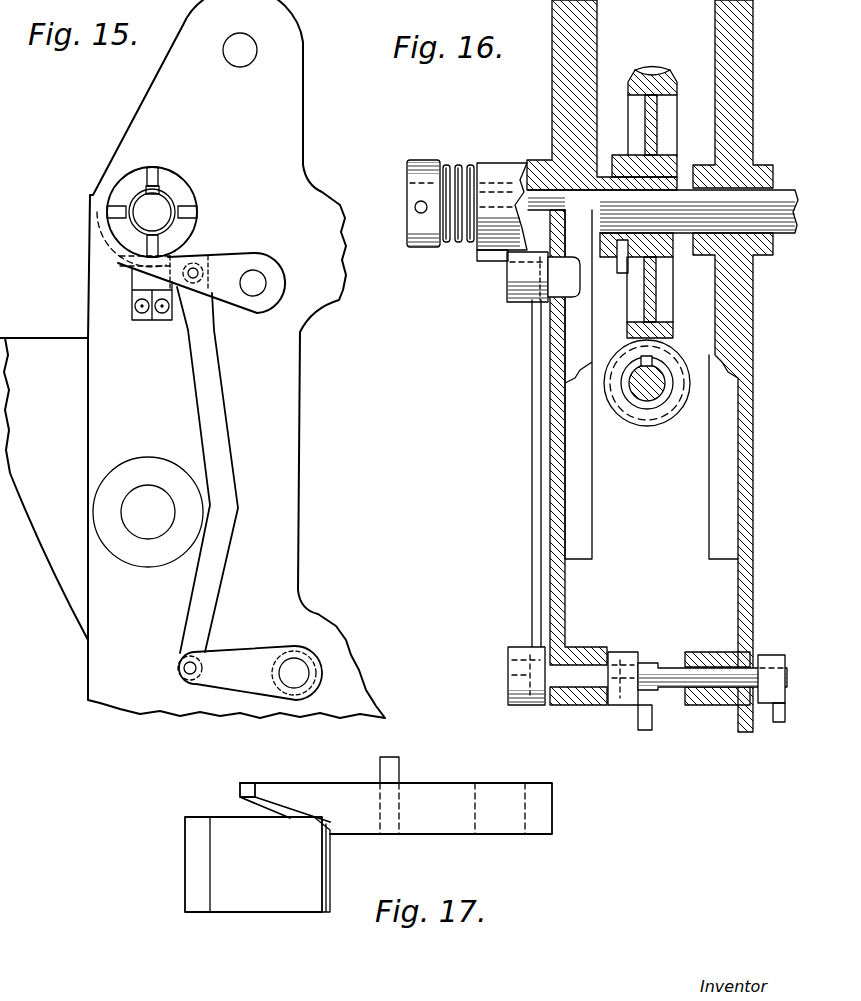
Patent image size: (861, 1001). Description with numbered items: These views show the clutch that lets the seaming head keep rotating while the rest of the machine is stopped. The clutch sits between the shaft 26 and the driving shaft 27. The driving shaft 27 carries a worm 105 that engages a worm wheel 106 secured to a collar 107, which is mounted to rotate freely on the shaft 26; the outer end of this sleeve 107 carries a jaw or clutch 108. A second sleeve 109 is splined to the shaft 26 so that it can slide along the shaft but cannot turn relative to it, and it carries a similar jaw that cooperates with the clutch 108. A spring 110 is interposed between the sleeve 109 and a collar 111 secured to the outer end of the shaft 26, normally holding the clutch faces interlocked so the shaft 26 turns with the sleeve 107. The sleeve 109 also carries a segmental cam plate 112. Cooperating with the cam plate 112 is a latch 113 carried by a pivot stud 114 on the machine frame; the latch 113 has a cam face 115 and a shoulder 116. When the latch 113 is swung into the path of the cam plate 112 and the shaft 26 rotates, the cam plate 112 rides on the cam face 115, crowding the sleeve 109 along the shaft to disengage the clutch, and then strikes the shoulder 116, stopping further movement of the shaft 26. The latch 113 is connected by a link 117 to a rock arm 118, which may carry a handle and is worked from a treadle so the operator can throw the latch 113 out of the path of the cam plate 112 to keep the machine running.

In FIG. 16, the shaft 26 is at (745, 197).
In FIG. 16, the driving shaft 27 is at (636, 394).
In FIG. 16, the worm 105 is at (663, 409).
In FIG. 16, the worm wheel 106 is at (668, 338).
In FIG. 16, the collar 107 is at (598, 177).
In FIG. 15, the jaw or clutch 108 is at (162, 173).
In FIG. 16, the jaw or clutch 108 is at (520, 180).
In FIG. 16, the sleeve 109 is at (481, 253).
In FIG. 16, the spring 110 is at (451, 163).
In FIG. 16, the collar 111 is at (417, 160).
In FIG. 15, the segmental cam plate 112 is at (106, 251).
In FIG. 16, the segmental cam plate 112 is at (500, 265).
In FIG. 17, the segmental cam plate 112 is at (248, 900).
In FIG. 15, the latch 113 is at (215, 262).
In FIG. 17, the latch 113 is at (341, 796).
In FIG. 15, the pivot stud 114 is at (255, 283).
In FIG. 16, the pivot stud 114 is at (512, 283).
In FIG. 17, the cam face 115 is at (273, 796).
In FIG. 17, the shoulder 116 is at (332, 828).
In FIG. 15, the link 117 is at (217, 426).
In FIG. 16, the link 117 is at (526, 436).
In FIG. 15, the rock arm 118 is at (234, 660).
In FIG. 16, the rock arm 118 is at (514, 640).